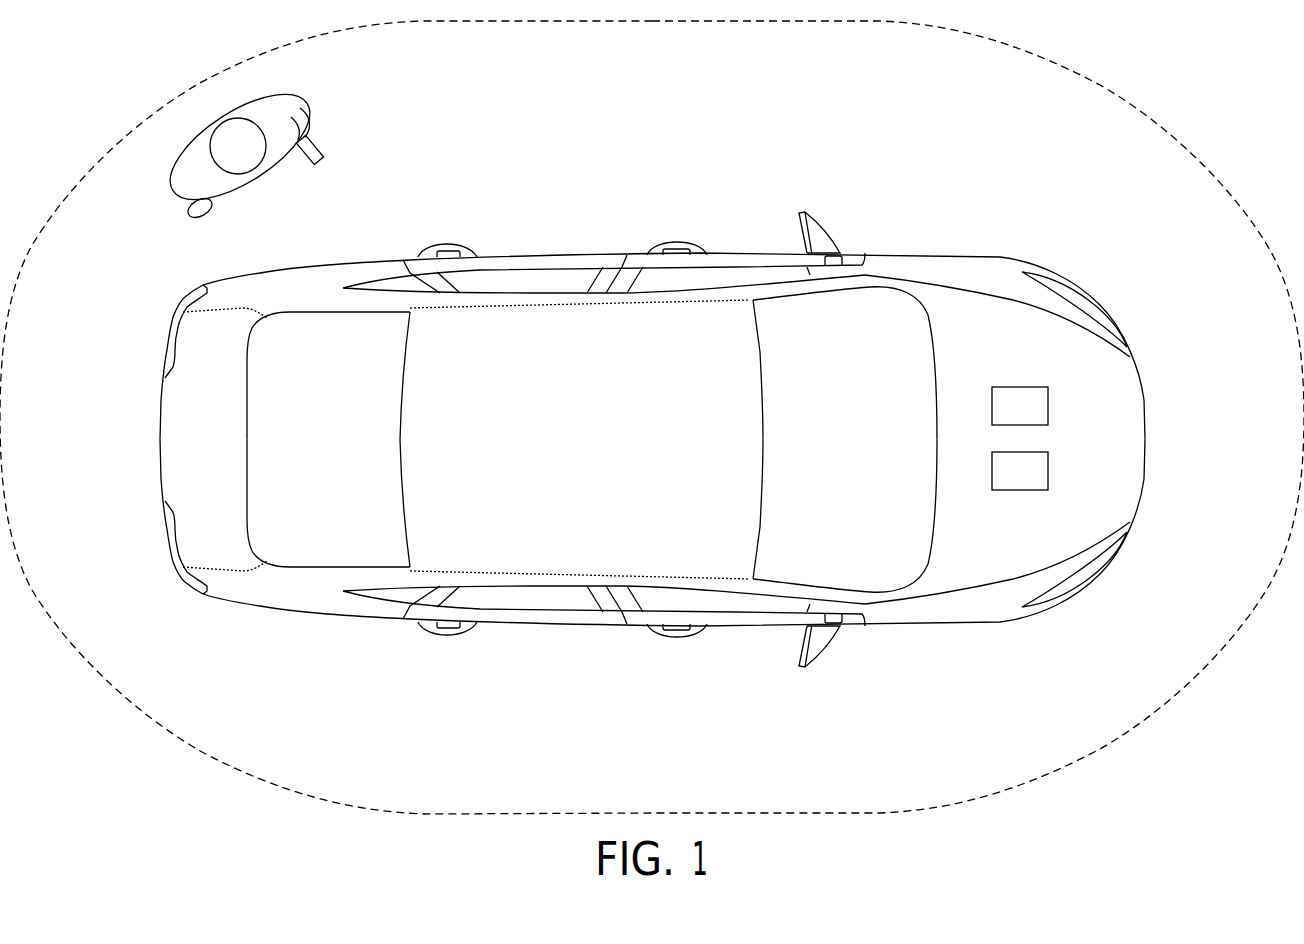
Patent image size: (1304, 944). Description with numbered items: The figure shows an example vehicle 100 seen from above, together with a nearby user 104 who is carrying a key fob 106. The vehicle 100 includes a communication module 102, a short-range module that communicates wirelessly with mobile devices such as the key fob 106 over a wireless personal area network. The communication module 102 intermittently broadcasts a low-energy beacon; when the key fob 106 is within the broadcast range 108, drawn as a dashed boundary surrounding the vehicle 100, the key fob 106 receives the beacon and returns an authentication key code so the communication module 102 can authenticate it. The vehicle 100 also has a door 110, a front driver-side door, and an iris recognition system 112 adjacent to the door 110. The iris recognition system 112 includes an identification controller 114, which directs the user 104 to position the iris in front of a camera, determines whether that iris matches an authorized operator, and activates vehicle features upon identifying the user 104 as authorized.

The vehicle 100 is at (950, 253).
The communication module 102 is at (1038, 417).
The user 104 is at (172, 185).
The key fob 106 is at (320, 149).
The broadcast range 108 is at (1162, 127).
The door 110 is at (718, 278).
The iris recognition system 112 is at (640, 214).
The identification controller 114 is at (1038, 482).